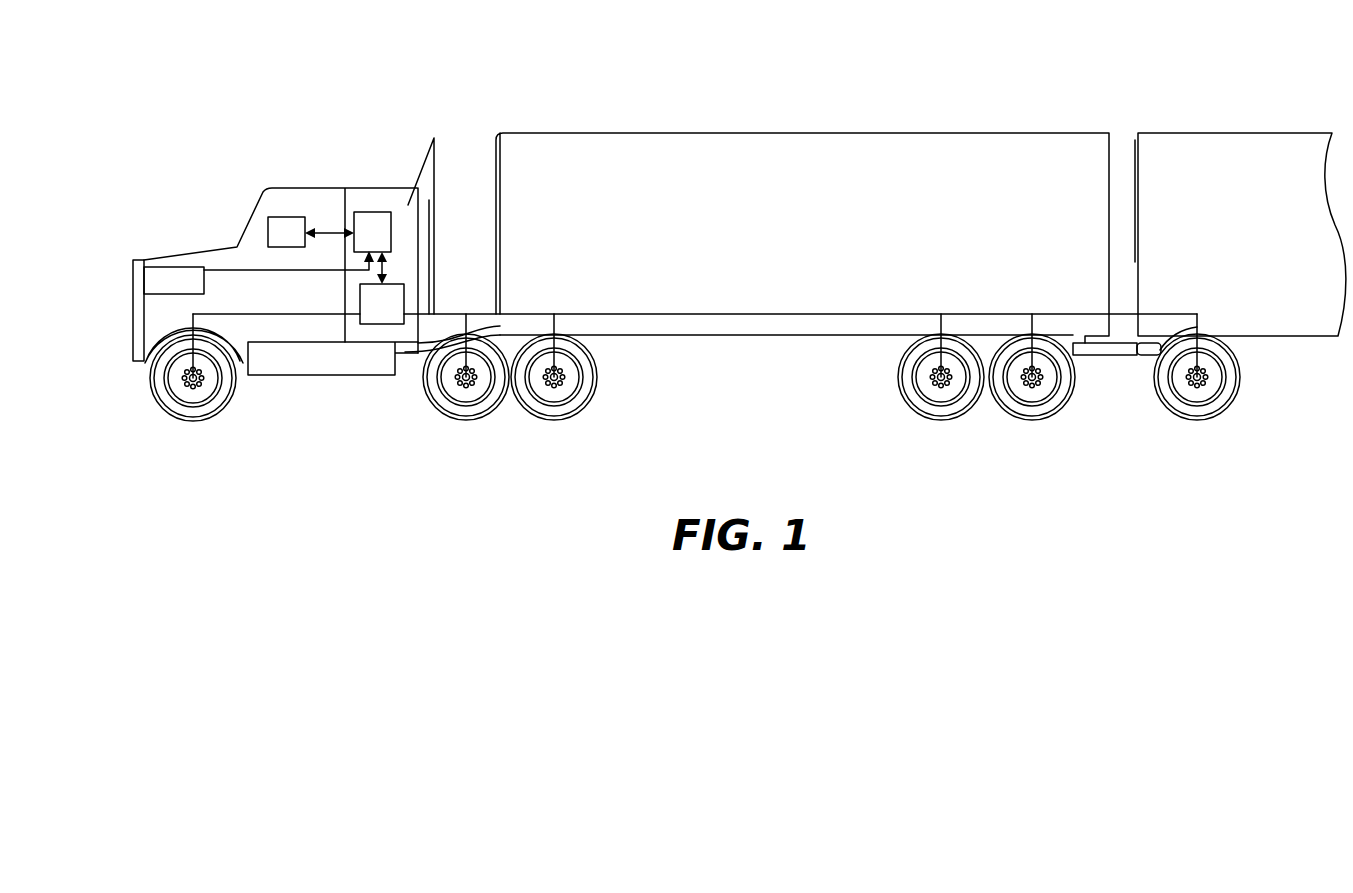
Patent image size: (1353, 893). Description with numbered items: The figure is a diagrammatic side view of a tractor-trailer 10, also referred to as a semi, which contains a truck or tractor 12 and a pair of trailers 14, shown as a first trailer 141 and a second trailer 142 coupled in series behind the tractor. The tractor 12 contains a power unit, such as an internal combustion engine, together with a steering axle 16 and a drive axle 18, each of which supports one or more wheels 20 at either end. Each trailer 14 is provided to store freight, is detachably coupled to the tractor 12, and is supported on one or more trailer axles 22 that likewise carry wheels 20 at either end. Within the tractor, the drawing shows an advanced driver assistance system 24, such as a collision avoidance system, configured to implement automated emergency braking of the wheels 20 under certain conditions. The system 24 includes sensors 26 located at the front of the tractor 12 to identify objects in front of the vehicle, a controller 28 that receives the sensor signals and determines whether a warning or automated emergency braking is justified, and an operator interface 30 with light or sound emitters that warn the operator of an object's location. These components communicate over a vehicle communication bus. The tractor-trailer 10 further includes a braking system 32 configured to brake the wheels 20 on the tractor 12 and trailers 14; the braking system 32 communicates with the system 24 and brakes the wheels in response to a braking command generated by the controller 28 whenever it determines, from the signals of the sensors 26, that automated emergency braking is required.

The tractor-trailer 10 is at (266, 150).
The tractor 12 is at (170, 254).
The trailer 14 is at (921, 244).
The first trailer 141 is at (605, 150).
The second trailer 142 is at (1215, 148).
The steering axle 16 is at (135, 409).
The drive axle 18 is at (505, 428).
The wheel 20 is at (213, 393).
The trailer axle 22 is at (980, 433).
The advanced driver assistance system 24 is at (418, 198).
The sensor 26 is at (153, 282).
The controller 28 is at (375, 220).
The operator interface 30 is at (288, 225).
The braking system 32 is at (387, 334).